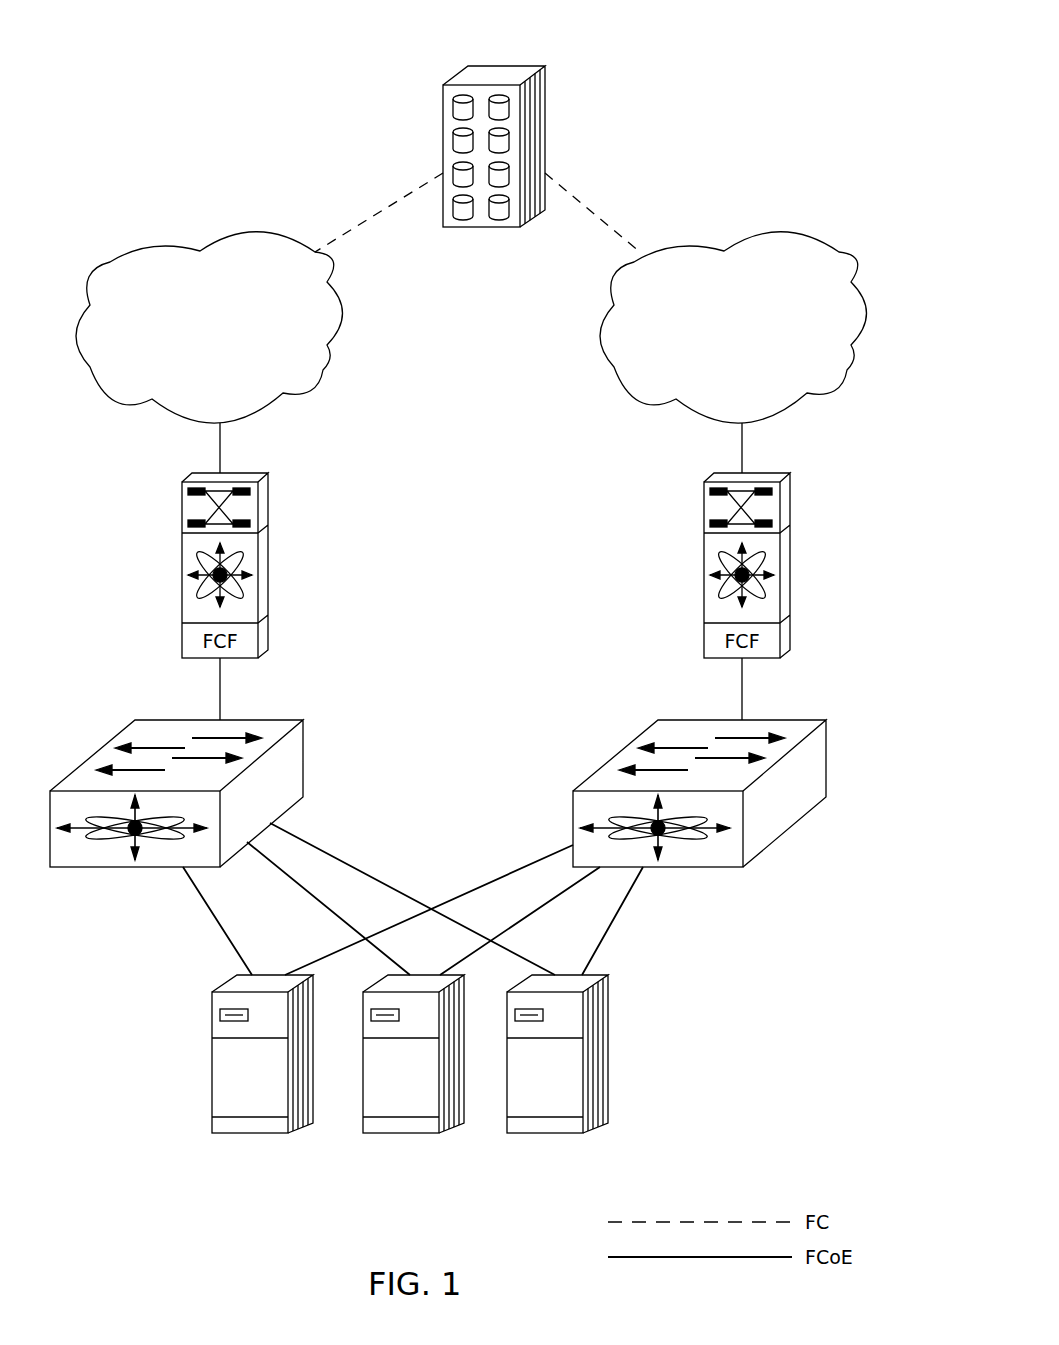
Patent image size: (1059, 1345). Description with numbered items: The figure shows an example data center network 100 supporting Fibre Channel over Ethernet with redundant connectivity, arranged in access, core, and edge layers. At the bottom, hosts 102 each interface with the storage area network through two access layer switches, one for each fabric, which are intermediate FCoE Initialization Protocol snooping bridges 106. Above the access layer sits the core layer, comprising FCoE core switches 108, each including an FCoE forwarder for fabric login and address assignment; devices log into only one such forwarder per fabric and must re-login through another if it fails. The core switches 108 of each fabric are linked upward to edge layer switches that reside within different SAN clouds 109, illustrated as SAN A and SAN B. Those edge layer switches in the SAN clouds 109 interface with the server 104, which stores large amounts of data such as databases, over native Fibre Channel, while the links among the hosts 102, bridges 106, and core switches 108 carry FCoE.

The data center network 100 is at (697, 90).
The host 102 is at (253, 1137).
The server 104 is at (545, 98).
The FIP snooping bridge 106 is at (95, 748).
The FCoE core switch 108 is at (268, 568).
The SAN cloud 109 is at (110, 262).